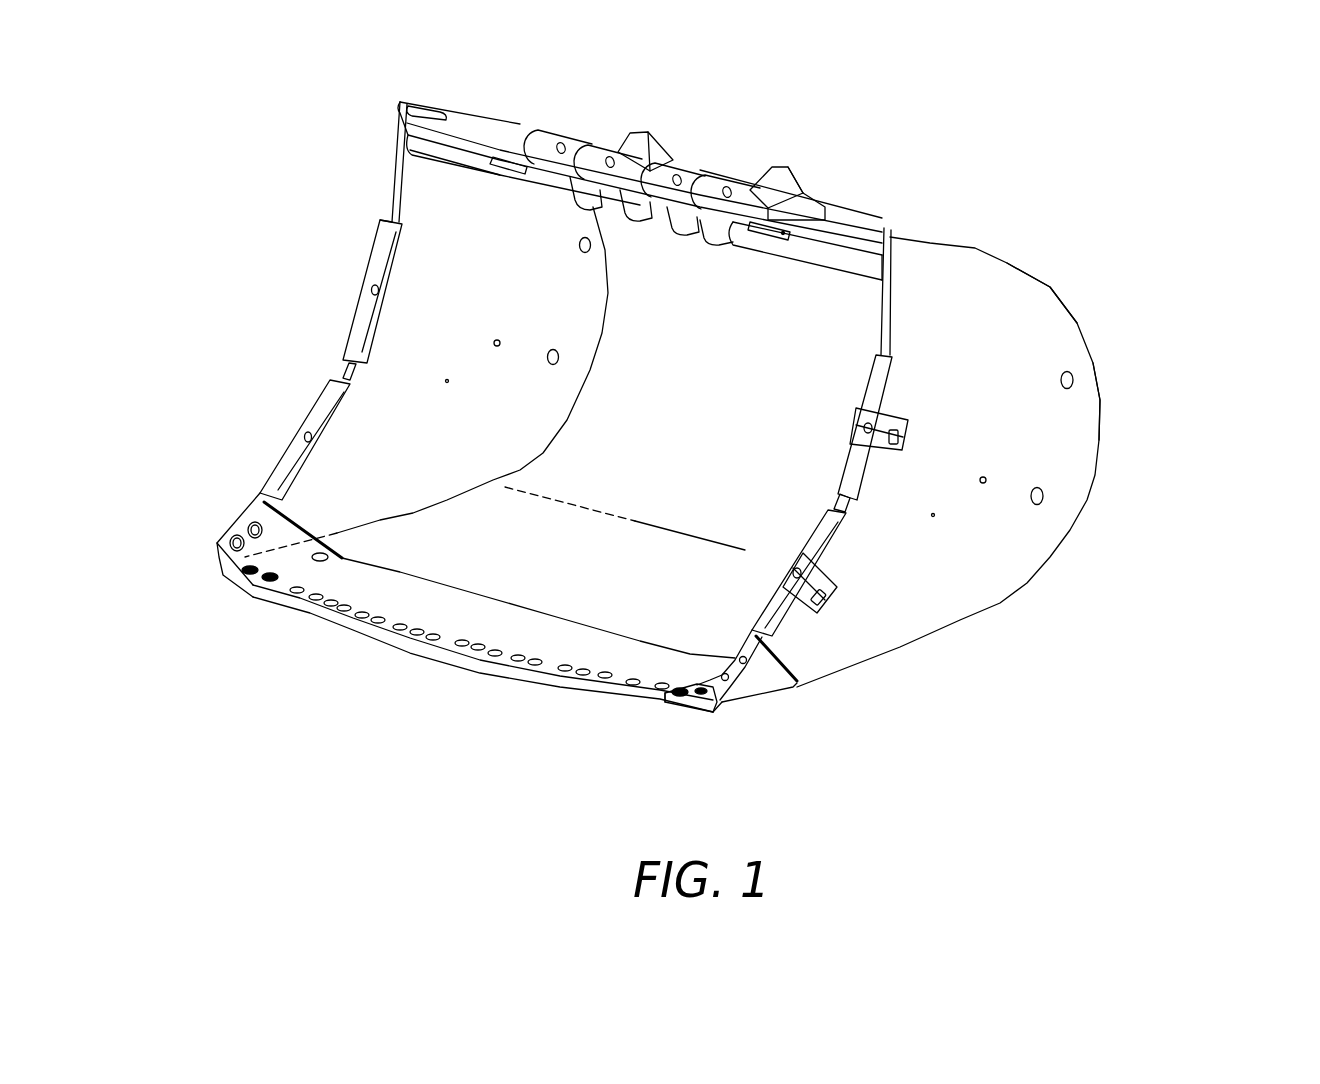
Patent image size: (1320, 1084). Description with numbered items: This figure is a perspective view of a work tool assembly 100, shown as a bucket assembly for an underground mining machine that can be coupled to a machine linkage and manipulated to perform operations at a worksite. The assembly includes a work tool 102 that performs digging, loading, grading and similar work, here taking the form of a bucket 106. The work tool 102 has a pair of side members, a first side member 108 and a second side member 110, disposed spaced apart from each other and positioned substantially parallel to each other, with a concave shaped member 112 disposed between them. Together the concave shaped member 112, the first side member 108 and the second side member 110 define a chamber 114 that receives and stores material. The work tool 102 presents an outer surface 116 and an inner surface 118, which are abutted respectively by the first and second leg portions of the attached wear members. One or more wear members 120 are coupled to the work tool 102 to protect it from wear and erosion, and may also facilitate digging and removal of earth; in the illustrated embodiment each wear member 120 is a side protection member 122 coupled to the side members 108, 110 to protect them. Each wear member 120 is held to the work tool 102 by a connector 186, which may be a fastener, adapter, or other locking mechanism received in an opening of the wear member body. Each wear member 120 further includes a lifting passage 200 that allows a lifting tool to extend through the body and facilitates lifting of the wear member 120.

The work tool assembly 100 is at (1131, 179).
The work tool 102 is at (1046, 289).
The bucket 106 is at (1095, 361).
The first side member 108 is at (898, 522).
The second side member 110 is at (400, 363).
The concave shaped member 112 is at (763, 363).
The chamber 114 is at (550, 520).
The outer surface 116 is at (973, 497).
The inner surface 118 is at (669, 315).
The wear member 120 is at (380, 228).
The side protection member 122 is at (380, 224).
The connector 186 is at (910, 440).
The lifting passage 200 is at (366, 290).